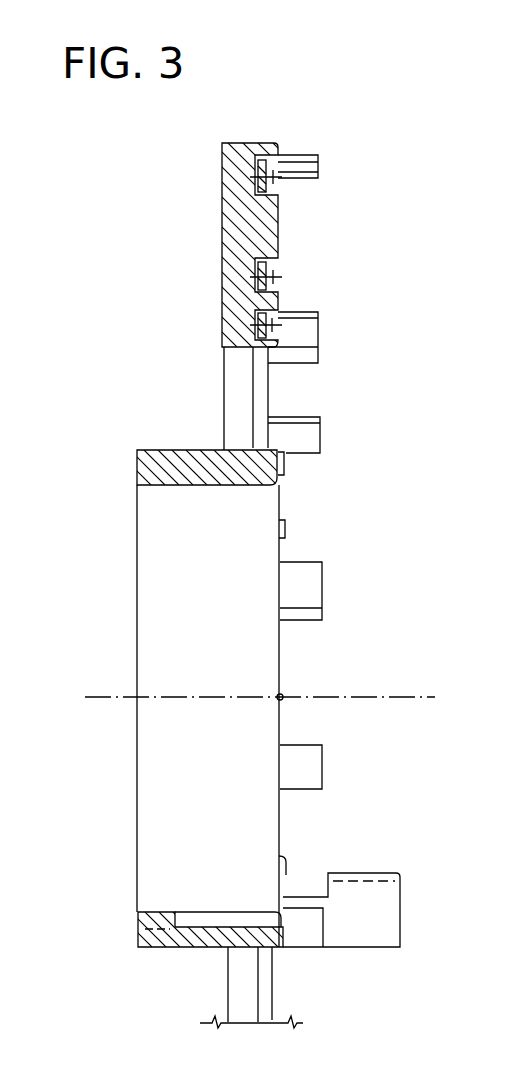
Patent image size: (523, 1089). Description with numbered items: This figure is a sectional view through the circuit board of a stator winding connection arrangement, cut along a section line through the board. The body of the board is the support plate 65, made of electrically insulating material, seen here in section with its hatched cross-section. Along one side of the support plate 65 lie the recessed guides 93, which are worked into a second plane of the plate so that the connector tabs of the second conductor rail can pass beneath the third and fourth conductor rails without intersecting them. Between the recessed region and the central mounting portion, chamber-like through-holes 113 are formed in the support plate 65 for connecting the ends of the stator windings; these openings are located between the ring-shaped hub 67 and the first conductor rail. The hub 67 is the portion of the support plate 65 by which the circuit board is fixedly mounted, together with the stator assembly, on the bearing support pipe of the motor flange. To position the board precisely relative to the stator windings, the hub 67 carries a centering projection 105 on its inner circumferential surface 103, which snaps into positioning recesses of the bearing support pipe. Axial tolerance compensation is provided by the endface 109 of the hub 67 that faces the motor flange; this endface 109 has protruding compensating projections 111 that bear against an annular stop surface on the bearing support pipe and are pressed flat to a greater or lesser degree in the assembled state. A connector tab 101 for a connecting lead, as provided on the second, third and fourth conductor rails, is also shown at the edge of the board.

The support plate 65 is at (221, 149).
The recessed guides 93 is at (254, 274).
The hub 67 is at (182, 447).
The through-holes 113 is at (238, 390).
The compensating projections 111 is at (289, 527).
The endface 109 is at (284, 655).
The inner circumferential surface 103 is at (207, 921).
The centering projection 105 is at (149, 916).
The connector tab 101 is at (382, 871).